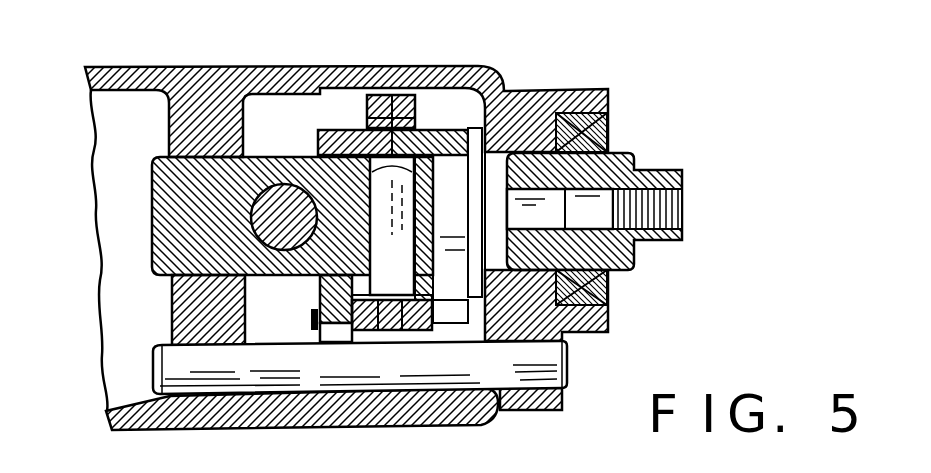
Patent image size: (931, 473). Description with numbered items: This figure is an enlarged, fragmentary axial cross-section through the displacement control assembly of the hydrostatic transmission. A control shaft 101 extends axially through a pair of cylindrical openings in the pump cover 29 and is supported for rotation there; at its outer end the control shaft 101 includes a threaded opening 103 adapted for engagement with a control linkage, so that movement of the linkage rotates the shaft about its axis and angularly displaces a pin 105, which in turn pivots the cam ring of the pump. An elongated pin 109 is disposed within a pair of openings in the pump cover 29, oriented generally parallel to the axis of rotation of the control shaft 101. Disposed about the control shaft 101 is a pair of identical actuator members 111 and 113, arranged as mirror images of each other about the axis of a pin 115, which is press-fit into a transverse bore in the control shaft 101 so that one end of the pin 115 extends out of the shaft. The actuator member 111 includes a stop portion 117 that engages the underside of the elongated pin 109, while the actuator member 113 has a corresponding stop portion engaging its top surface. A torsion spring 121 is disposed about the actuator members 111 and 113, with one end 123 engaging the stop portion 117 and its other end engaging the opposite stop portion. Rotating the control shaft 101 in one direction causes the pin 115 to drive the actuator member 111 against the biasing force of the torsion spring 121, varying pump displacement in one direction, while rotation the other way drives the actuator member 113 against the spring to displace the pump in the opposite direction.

The pump cover 29 is at (194, 93).
The control shaft 101 is at (165, 205).
The threaded opening 103 is at (667, 221).
The pin 105 is at (276, 195).
The elongated pin 109 is at (485, 364).
The actuator member 111 is at (333, 133).
The actuator member 113 is at (452, 128).
The pin 115 is at (372, 197).
The stop portion 117 is at (310, 345).
The torsion spring 121 is at (370, 127).
The end of torsion spring 123 is at (311, 326).